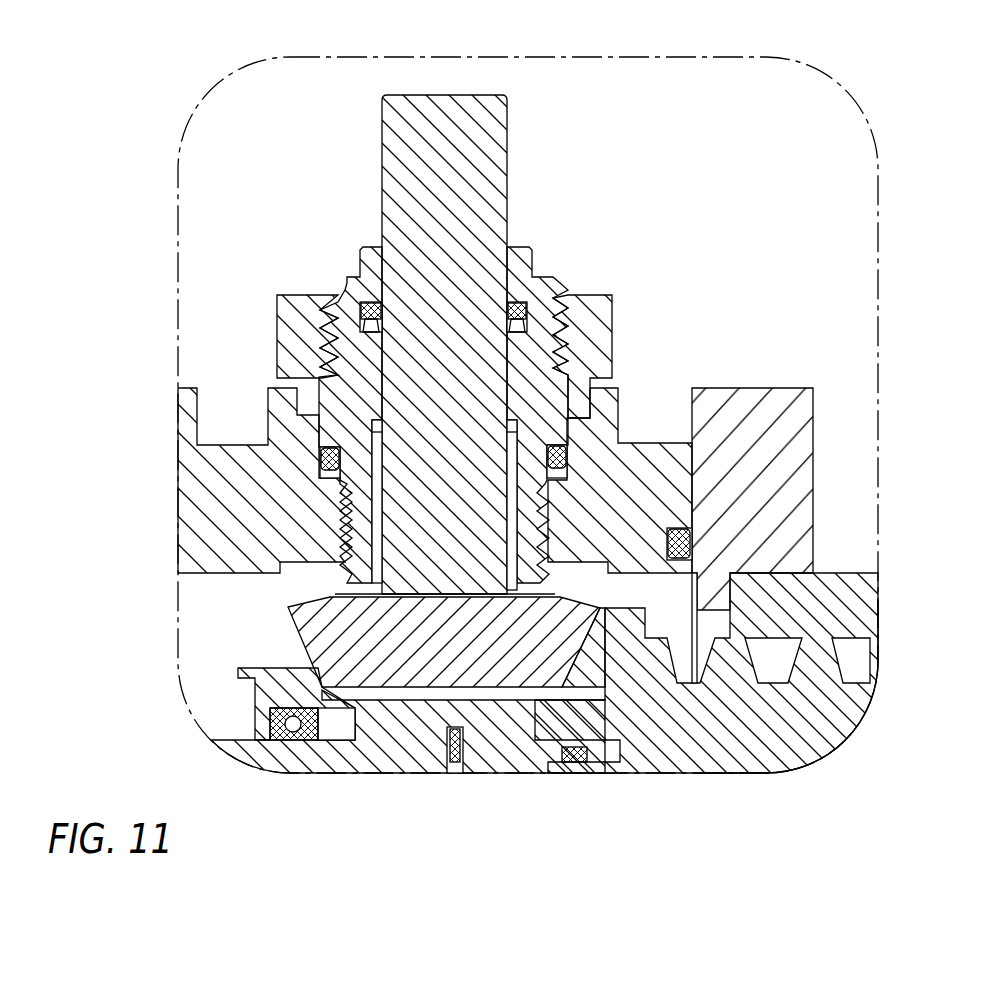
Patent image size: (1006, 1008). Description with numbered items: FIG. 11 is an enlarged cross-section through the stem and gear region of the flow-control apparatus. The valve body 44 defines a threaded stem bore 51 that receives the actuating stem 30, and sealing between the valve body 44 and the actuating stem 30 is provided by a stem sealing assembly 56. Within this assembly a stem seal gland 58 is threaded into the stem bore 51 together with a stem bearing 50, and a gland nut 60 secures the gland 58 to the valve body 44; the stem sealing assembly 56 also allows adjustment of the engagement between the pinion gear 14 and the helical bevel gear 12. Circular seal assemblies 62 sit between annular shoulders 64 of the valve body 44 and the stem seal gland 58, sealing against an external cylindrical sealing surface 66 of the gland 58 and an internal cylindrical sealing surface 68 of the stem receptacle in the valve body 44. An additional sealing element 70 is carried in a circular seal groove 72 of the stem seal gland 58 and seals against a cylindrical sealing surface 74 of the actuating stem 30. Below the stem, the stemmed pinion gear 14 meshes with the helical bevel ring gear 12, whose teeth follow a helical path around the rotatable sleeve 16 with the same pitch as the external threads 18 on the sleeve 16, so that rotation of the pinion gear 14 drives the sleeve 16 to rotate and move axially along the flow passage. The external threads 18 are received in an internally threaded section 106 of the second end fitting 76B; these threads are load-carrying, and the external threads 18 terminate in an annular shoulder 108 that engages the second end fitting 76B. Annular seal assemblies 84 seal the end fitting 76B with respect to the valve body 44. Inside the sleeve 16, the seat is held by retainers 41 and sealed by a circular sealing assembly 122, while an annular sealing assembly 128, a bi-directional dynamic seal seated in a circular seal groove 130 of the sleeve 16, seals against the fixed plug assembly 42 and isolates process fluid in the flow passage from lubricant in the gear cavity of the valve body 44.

The actuating stem 30 is at (497, 171).
The stem sealing assembly 56 is at (650, 190).
The stem seal gland 58 is at (532, 257).
The gland nut 60 is at (605, 313).
The additional sealing element 70 is at (318, 307).
The circular seal groove 72 is at (360, 272).
The cylindrical sealing surface 74 is at (370, 300).
The valve body 44 is at (198, 552).
The stem bearing 50 is at (512, 511).
The first threaded bore 51 is at (558, 500).
The seal assemblies 62 is at (322, 470).
The annular shoulders 64 is at (320, 456).
The external cylindrical sealing surface 66 is at (575, 448).
The internal cylindrical sealing surface 68 is at (566, 475).
The second end fitting 76B is at (803, 428).
The seal assemblies 84 is at (692, 545).
The internally threaded section 106 is at (862, 650).
The stemmed pinion gear 14 is at (325, 640).
The helical bevel gear 12 is at (632, 648).
The rotatable sleeve 16 is at (772, 743).
The external threads 18 is at (815, 652).
The annular shoulder 108 is at (635, 652).
The plug assembly 42 is at (298, 760).
The annular sealing assembly 128 is at (280, 737).
The circular seal groove 130 is at (340, 730).
The retainers 41 is at (437, 755).
The circular sealing assembly 122 is at (578, 760).